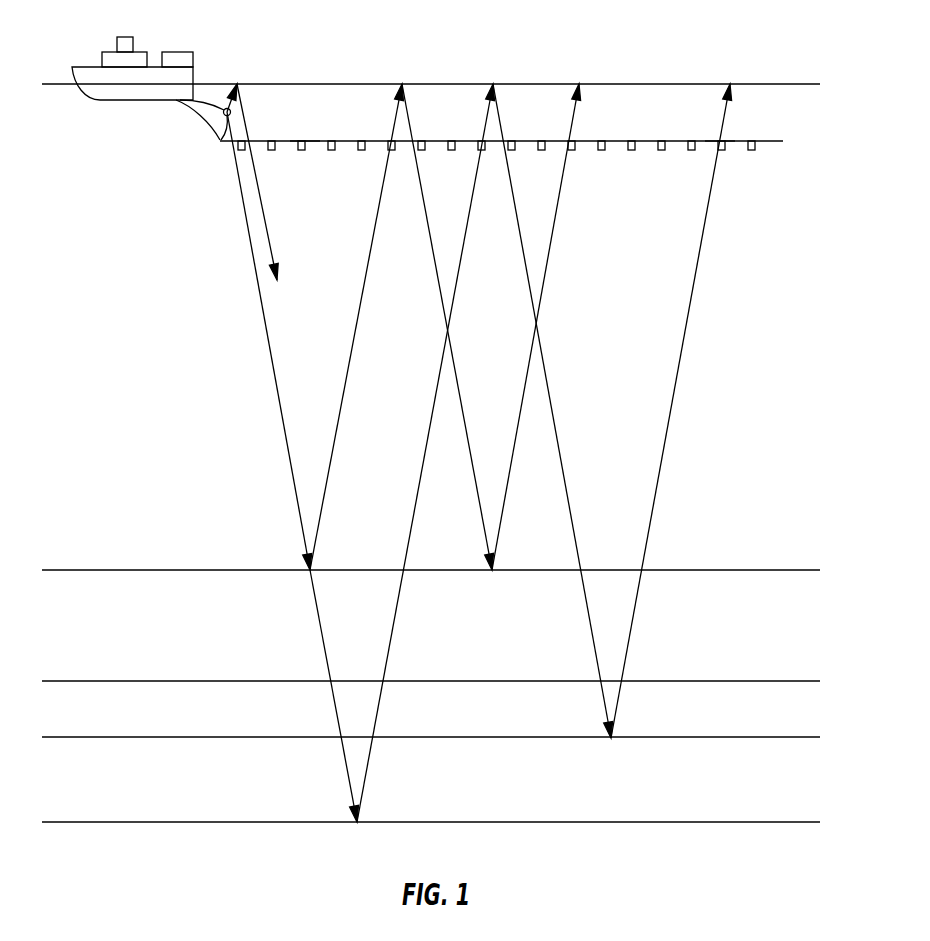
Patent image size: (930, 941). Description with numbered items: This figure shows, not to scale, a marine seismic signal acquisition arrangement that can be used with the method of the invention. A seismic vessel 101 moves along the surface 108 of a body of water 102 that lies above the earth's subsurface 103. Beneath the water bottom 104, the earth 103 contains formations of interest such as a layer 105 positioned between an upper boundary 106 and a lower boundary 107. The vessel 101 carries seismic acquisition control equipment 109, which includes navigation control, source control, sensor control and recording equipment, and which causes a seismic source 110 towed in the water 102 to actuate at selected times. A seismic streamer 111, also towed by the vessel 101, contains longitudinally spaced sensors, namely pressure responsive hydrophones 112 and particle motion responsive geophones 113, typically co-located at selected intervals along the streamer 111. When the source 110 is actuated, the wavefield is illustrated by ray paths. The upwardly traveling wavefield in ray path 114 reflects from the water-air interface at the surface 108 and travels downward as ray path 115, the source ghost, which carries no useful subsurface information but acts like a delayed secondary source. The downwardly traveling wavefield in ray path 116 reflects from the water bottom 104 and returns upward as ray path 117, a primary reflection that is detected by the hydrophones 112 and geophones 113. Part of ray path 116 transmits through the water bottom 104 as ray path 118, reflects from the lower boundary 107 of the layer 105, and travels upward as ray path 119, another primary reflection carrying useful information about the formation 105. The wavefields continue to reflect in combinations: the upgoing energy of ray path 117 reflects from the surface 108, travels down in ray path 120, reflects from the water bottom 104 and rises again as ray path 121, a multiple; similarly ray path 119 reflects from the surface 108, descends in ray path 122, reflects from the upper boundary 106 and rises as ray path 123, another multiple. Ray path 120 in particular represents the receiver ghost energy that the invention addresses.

The seismic vessel 101 is at (127, 37).
The body of water 102 is at (175, 313).
The earth's subsurface 103 is at (194, 639).
The water bottom 104 is at (148, 568).
The layer 105 is at (511, 789).
The upper boundary 106 is at (148, 737).
The lower boundary 107 is at (148, 822).
The water surface 108 is at (540, 84).
The seismic acquisition control equipment 109 is at (180, 52).
The seismic source 110 is at (222, 140).
The seismic streamer 111 is at (643, 142).
The hydrophone 112 is at (305, 140).
The geophone 113 is at (333, 140).
The ray path 114 is at (224, 113).
The ray path 115 is at (265, 217).
The ray path 116 is at (276, 382).
The ray path 117 is at (346, 382).
The ray path 118 is at (322, 637).
The ray path 119 is at (392, 637).
The ray path 120 is at (484, 530).
The ray path 121 is at (499, 530).
The ray path 122 is at (592, 637).
The ray path 123 is at (633, 637).